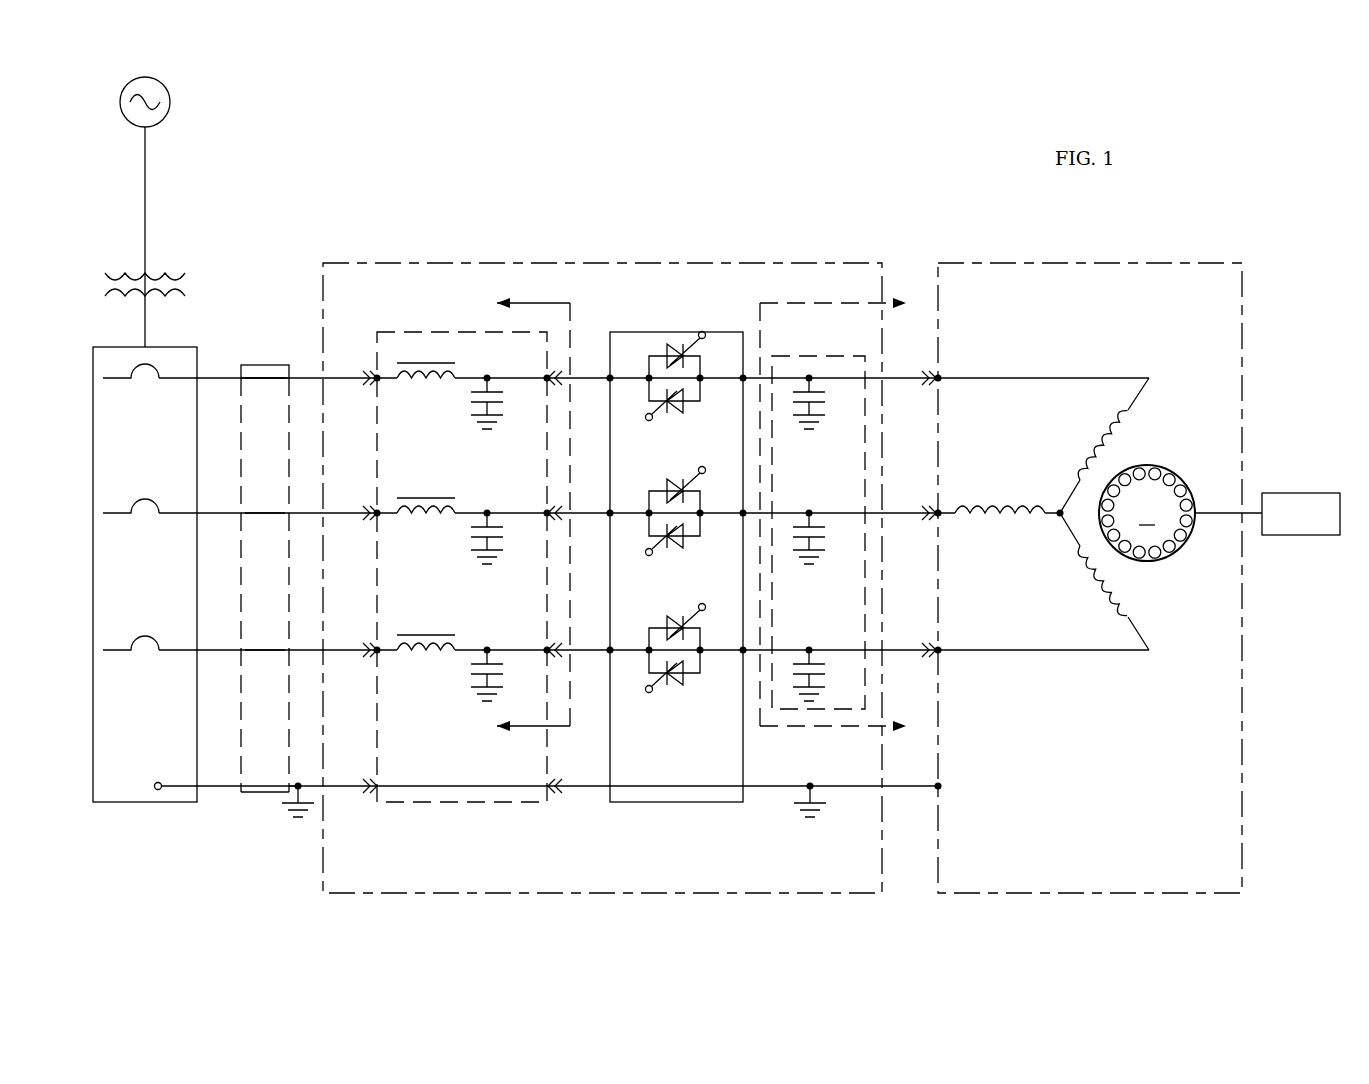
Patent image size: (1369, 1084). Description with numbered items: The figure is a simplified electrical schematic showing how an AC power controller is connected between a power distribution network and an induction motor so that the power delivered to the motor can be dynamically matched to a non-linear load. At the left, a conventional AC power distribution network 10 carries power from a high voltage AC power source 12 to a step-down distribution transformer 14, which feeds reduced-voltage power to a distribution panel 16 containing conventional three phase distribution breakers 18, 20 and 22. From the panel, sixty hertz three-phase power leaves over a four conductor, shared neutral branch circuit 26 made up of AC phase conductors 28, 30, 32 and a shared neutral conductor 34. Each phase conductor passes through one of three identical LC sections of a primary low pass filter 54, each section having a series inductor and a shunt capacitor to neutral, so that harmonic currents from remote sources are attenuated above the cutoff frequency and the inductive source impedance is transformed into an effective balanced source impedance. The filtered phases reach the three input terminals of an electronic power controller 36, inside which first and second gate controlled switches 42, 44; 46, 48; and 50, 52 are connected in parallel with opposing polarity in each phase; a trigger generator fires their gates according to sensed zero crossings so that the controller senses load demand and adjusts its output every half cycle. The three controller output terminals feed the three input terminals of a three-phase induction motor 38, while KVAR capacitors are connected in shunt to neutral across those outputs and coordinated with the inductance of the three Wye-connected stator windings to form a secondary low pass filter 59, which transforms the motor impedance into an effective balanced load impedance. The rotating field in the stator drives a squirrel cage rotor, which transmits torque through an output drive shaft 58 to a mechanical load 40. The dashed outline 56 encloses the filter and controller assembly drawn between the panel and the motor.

The AC power distribution network 10 is at (203, 222).
The high voltage AC power source 12 is at (176, 111).
The step-down distribution transformer 14 is at (176, 277).
The distribution panel 16 is at (179, 341).
The distribution breaker 18 is at (136, 382).
The distribution breaker 20 is at (136, 517).
The distribution breaker 22 is at (136, 654).
The shared neutral branch circuit 26 is at (272, 364).
The AC phase conductor 28 is at (264, 381).
The AC phase conductor 30 is at (264, 516).
The AC phase conductor 32 is at (264, 653).
The shared neutral conductor 34 is at (268, 794).
The electronic power controller 36 is at (666, 326).
The three-phase induction motor 38 is at (1105, 256).
The mechanical load 40 is at (1297, 548).
The gate controlled switch 42 is at (664, 353).
The gate controlled switch 44 is at (675, 413).
The gate controlled switch 46 is at (667, 488).
The gate controlled switch 48 is at (675, 548).
The gate controlled switch 50 is at (667, 625).
The gate controlled switch 52 is at (675, 685).
The primary low pass filter 54 is at (454, 326).
The motor control system 56 is at (628, 258).
The output drive shaft 58 is at (1214, 512).
The secondary low pass filter 59 is at (817, 346).